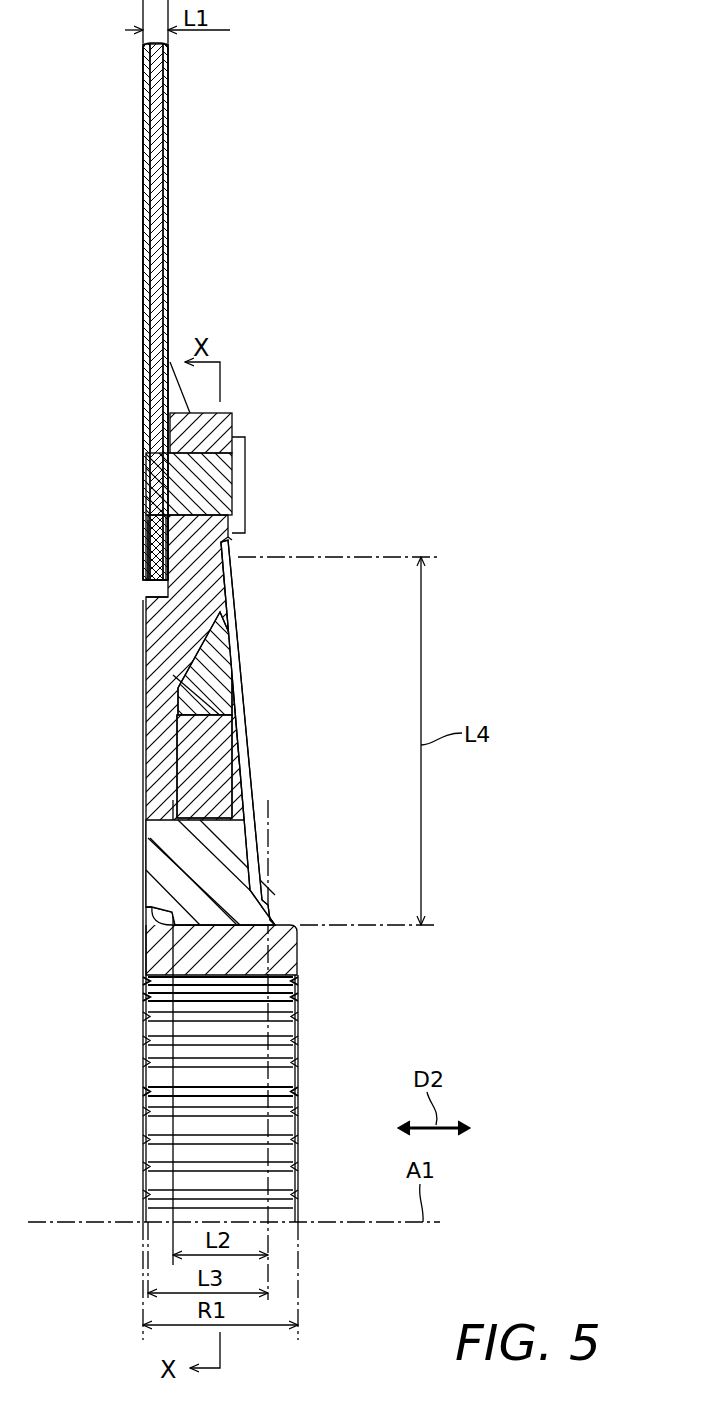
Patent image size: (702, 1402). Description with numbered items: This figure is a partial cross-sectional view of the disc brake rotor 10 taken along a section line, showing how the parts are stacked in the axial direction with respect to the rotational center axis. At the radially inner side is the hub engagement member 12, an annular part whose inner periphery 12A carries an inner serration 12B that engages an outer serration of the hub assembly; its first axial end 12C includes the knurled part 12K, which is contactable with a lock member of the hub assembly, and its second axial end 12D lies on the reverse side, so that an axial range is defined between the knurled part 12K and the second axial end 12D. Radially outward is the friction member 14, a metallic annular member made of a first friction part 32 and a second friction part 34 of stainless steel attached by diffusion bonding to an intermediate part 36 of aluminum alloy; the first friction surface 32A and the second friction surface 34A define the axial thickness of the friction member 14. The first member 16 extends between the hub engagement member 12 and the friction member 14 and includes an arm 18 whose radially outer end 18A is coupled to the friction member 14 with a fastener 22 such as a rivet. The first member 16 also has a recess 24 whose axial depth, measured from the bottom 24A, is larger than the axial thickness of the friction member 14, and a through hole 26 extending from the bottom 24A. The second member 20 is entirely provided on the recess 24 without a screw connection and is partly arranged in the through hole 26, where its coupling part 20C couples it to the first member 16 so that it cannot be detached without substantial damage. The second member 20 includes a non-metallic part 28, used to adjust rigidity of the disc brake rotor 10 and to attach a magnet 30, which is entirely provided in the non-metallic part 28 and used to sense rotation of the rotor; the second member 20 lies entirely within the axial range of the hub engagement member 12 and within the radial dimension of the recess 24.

The disc brake rotor 10 is at (299, 288).
The hub engagement member 12 is at (242, 1070).
The inner periphery 12A is at (245, 998).
The inner serration 12B is at (290, 1075).
The first axial end 12C is at (143, 948).
The second axial end 12D is at (298, 960).
The knurled part 12K is at (171, 1080).
The friction member 14 is at (153, 311).
The first member 16 is at (272, 592).
The arm 18 is at (201, 668).
The radially outer end 18A is at (230, 413).
The second member 20 is at (252, 810).
The coupling part 20C is at (160, 862).
The fastener 22 is at (250, 482).
The recess 24 is at (232, 655).
The bottom 24A is at (240, 690).
The through hole 26 is at (150, 898).
The non-metallic part 28 is at (230, 870).
The magnet 30 is at (235, 758).
The first friction part 32 is at (143, 60).
The first friction surface 32A is at (143, 148).
The second friction part 34 is at (168, 75).
The second friction surface 34A is at (168, 172).
The intermediate part 36 is at (155, 105).